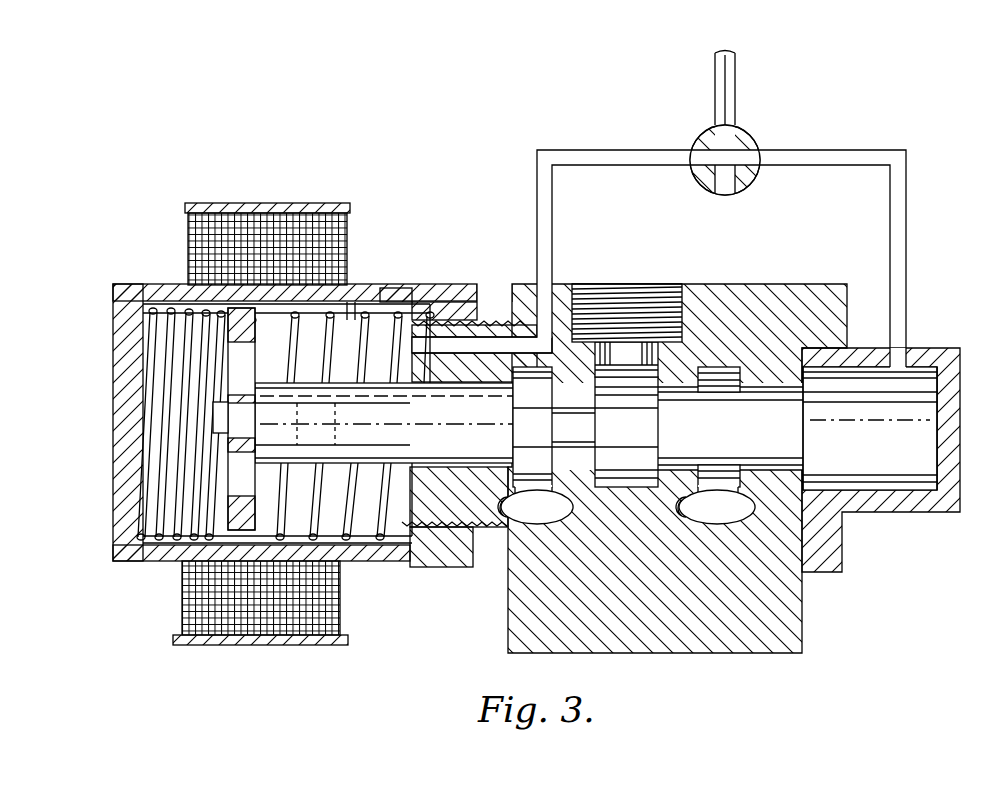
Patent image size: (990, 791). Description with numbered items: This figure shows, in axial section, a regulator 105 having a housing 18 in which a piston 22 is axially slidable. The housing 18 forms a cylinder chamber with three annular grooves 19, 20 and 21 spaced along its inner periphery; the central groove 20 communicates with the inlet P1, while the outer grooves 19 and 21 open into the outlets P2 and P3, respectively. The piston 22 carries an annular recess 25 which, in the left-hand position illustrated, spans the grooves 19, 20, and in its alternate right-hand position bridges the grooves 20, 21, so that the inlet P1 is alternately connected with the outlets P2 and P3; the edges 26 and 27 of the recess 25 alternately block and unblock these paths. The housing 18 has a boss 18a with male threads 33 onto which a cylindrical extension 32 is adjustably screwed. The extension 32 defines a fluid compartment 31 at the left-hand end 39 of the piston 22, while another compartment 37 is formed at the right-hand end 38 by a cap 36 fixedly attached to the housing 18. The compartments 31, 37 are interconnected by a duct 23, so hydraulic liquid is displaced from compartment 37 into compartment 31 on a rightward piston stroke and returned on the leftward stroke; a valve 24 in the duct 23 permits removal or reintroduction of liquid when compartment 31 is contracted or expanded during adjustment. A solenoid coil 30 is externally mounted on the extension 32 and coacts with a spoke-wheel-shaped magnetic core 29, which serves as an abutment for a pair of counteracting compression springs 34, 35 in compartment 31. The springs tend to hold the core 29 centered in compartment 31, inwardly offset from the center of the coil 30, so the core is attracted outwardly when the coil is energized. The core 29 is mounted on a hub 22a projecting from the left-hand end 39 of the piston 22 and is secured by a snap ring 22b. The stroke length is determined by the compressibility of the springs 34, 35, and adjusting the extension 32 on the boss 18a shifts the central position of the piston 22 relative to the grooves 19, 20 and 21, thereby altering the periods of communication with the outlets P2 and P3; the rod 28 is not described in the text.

The housing 18 is at (662, 654).
The boss 18a is at (402, 530).
The annular groove 19 is at (493, 345).
The central annular groove 20 is at (598, 378).
The annular groove 21 is at (722, 367).
The piston 22 is at (421, 429).
The hub 22a is at (222, 445).
The snap ring 22b is at (220, 403).
The duct 23 is at (905, 160).
The valve 24 is at (760, 149).
The annular recess 25 is at (625, 400).
The edge of recess 26 is at (516, 367).
The edge of recess 27 is at (648, 462).
The rod 28 is at (258, 431).
The magnetic core 29 is at (232, 368).
The solenoid coil 30 is at (342, 633).
The fluid compartment 31 is at (405, 300).
The cylindrical extension 32 is at (445, 302).
The male threads 33 is at (482, 300).
The compression spring 34 is at (160, 310).
The compression spring 35 is at (367, 316).
The cap 36 is at (818, 370).
The compartment 37 is at (928, 378).
The right-hand end of piston 38 is at (848, 385).
The left-hand end of piston 39 is at (225, 398).
The regulator 105 is at (946, 236).
The inlet P1 is at (692, 300).
The outlet P2 is at (540, 515).
The outlet P3 is at (748, 505).